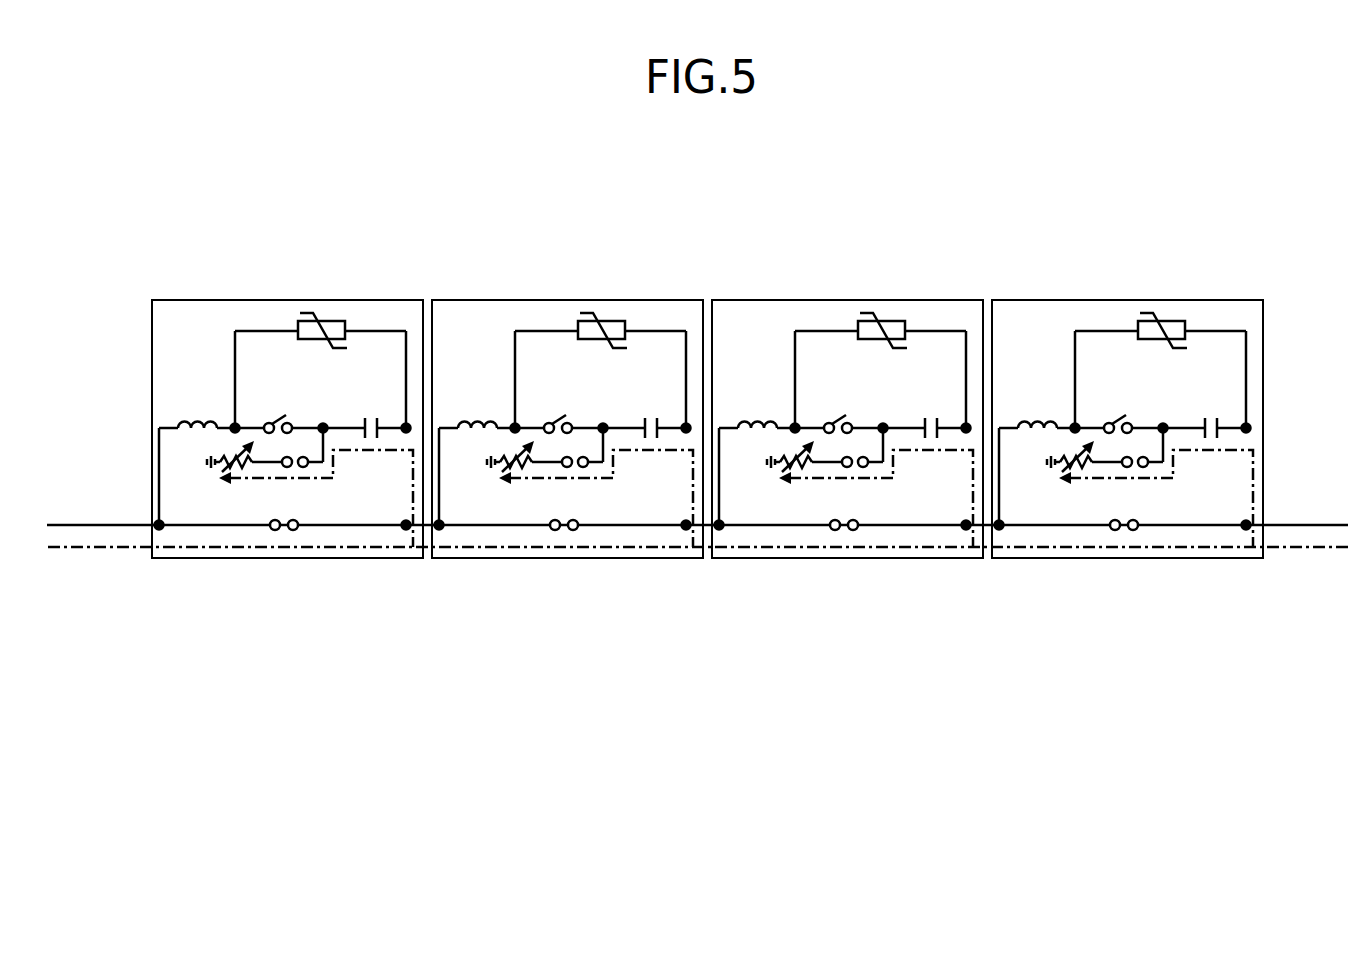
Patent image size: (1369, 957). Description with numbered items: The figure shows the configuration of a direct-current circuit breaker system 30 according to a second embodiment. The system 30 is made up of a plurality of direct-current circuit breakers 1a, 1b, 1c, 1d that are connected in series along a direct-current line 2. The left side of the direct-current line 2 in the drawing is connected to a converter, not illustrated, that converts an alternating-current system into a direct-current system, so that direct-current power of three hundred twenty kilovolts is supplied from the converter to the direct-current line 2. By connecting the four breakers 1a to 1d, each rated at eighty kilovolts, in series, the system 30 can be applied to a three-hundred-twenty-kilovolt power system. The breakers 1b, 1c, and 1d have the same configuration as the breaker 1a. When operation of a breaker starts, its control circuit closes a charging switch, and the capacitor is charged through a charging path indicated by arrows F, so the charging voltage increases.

The direct-current circuit breaker system 30 is at (732, 198).
The direct-current circuit breaker 1a is at (384, 300).
The direct-current circuit breaker 1b is at (664, 300).
The direct-current circuit breaker 1c is at (944, 300).
The direct-current circuit breaker 1d is at (1224, 300).
The direct-current line 2 is at (88, 522).
The charging path F is at (1308, 546).